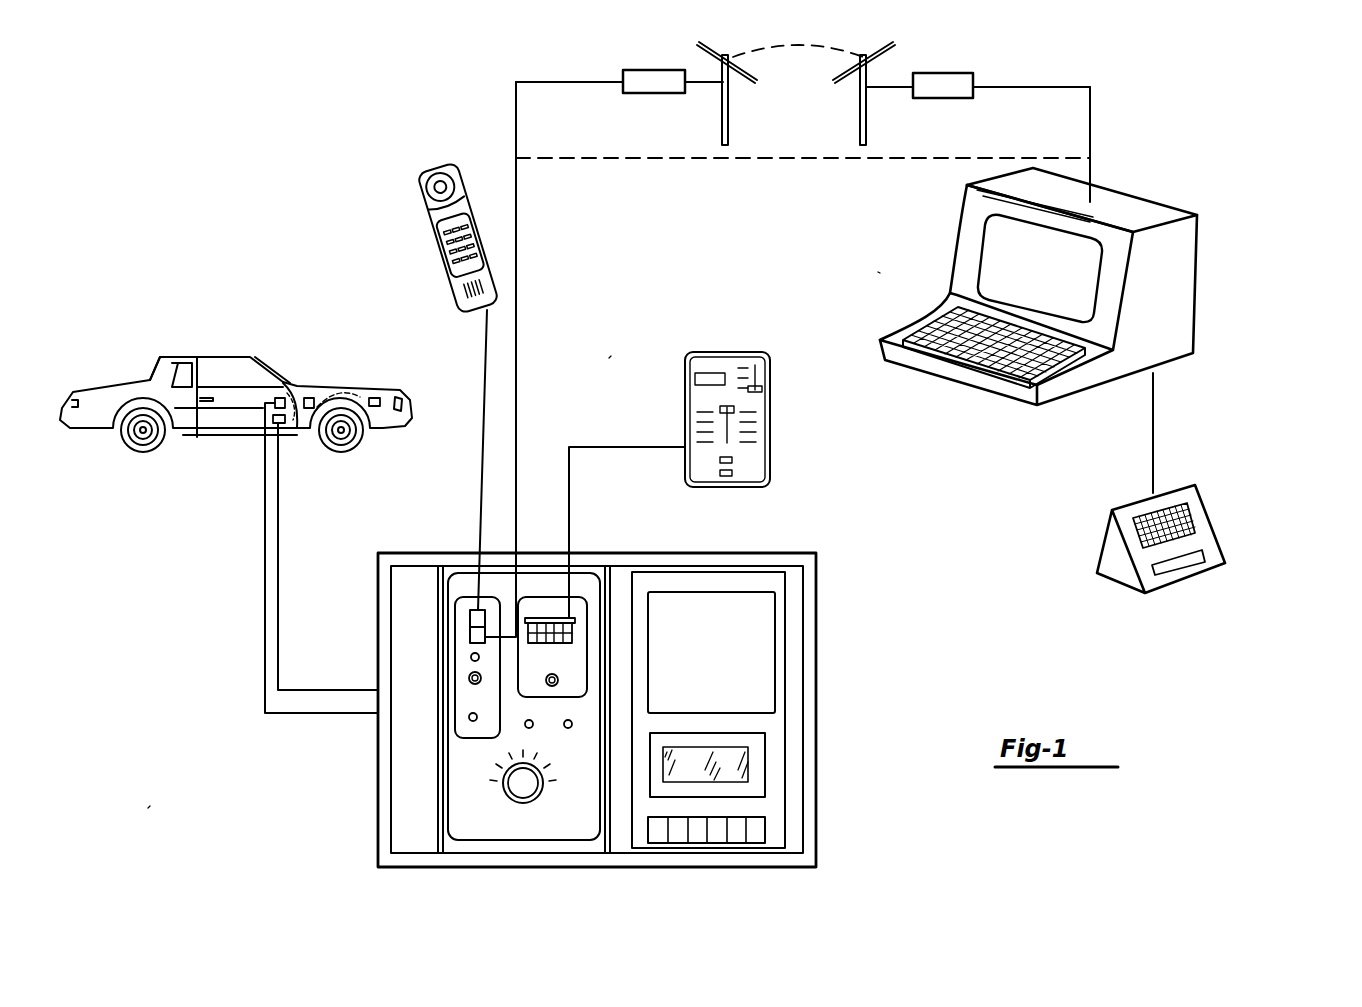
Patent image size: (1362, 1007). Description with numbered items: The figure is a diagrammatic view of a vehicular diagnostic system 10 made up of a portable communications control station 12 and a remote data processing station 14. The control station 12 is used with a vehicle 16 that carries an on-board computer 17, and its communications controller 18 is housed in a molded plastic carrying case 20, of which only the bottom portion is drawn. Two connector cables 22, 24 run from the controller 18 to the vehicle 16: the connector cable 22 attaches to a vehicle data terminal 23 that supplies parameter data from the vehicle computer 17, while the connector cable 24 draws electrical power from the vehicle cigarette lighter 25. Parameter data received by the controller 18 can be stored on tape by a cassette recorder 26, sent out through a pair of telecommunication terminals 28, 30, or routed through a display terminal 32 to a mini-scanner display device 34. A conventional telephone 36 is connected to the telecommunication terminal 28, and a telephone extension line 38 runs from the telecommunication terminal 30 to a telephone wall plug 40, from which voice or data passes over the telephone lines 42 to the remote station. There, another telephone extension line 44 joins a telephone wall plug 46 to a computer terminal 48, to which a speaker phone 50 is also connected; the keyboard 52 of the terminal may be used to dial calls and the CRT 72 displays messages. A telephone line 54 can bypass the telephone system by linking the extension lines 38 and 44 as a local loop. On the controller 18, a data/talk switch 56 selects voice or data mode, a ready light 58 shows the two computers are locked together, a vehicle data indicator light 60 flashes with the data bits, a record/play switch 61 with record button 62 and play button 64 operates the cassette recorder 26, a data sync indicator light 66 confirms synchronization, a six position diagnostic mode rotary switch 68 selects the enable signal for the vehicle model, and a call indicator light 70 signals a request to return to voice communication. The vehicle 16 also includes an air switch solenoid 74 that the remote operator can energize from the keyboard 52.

The vehicular diagnostic system 10 is at (212, 738).
The portable communications control station 12 is at (607, 361).
The remote data processing station 14 is at (881, 275).
The vehicle 16 is at (193, 440).
The on-board computer 17 is at (311, 397).
The communications controller 18 is at (821, 623).
The molded plastic carrying case 20 is at (818, 778).
The connector cable 22 is at (263, 585).
The vehicle data terminal 23 is at (280, 396).
The connector cable 24 is at (278, 575).
The vehicle cigarette lighter 25 is at (286, 424).
The cassette recorder 26 is at (766, 679).
The telecommunication terminal 28 is at (470, 617).
The telecommunication terminal 30 is at (470, 630).
The display terminal 32 is at (548, 655).
The mini-scanner display device 34 is at (770, 428).
The telephone 36 is at (420, 200).
The telephone extension line 38 is at (516, 238).
The telephone wall plug 40 is at (623, 78).
The telephone lines 42 is at (800, 89).
The telephone extension line 44 is at (1092, 118).
The telephone wall plug 46 is at (975, 80).
The computer terminal 48 is at (1198, 252).
The speaker phone 50 is at (1217, 521).
The keyboard 52 is at (985, 352).
The telephone line 54 is at (666, 160).
The data/talk switch 56 is at (469, 678).
The ready light 58 is at (470, 657).
The vehicle data indicator light 60 is at (526, 727).
The record/play switch 61 is at (558, 680).
The record button 62 is at (655, 840).
The play button 64 is at (695, 840).
The data sync indicator light 66 is at (568, 728).
The diagnostic mode rotary switch 68 is at (524, 790).
The call indicator light 70 is at (469, 718).
The CRT 72 is at (995, 243).
The air switch solenoid 74 is at (378, 395).